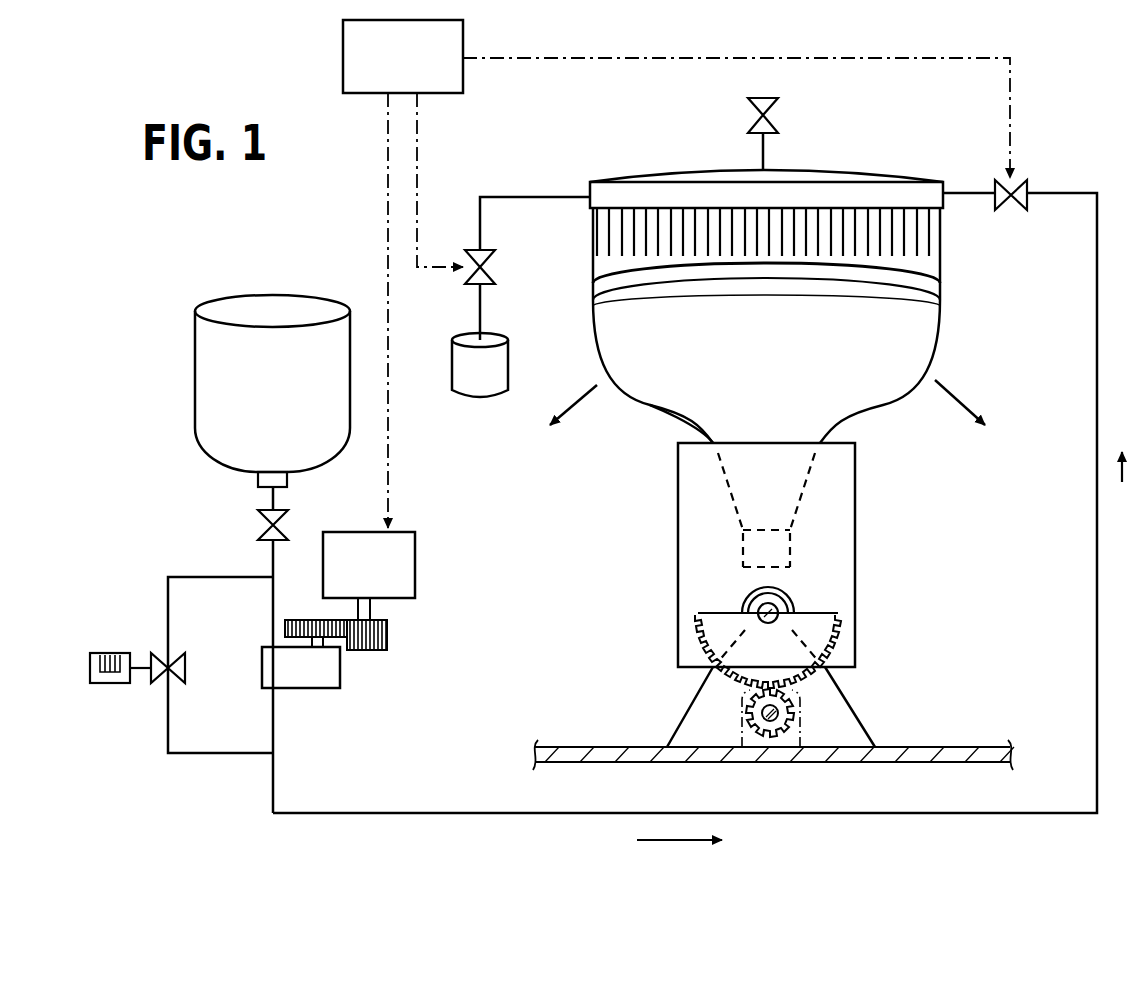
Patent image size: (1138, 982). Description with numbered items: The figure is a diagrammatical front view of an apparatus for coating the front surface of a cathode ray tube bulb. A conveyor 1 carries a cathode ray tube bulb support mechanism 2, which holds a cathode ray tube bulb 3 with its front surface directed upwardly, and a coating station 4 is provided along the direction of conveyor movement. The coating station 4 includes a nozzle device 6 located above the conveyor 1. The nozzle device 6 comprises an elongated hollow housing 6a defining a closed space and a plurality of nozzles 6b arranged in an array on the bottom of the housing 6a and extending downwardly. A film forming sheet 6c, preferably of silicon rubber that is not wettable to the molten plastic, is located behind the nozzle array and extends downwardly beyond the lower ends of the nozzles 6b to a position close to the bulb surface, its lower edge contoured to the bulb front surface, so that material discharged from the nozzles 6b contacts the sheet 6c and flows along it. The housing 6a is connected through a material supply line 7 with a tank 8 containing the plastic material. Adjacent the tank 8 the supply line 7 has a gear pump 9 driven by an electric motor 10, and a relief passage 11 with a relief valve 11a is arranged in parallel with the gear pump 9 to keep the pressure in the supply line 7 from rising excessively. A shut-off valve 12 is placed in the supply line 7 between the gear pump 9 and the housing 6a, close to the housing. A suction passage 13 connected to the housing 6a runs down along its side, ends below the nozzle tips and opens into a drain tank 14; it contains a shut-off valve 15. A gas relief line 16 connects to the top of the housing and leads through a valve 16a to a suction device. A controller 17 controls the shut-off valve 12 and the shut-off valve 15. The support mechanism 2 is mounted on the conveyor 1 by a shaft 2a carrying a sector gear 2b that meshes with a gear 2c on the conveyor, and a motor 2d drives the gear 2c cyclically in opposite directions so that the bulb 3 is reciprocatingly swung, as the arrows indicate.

The conveyor 1 is at (567, 748).
The cathode ray tube bulb support mechanism 2 is at (697, 574).
The shaft 2a is at (790, 606).
The sector gear 2b is at (825, 622).
The gear 2c is at (800, 712).
The motor 2d is at (738, 735).
The cathode ray tube bulb 3 is at (850, 395).
The coating station 4 is at (1008, 370).
The nozzle device 6 is at (799, 270).
The hollow housing 6a is at (640, 196).
The nozzles 6b is at (925, 240).
The film forming sheet 6c is at (920, 272).
The material supply line 7 is at (440, 812).
The tank 8 is at (205, 348).
The gear pump 9 is at (332, 690).
The electric motor 10 is at (405, 585).
The relief passage 11 is at (205, 577).
The relief valve 11a is at (100, 690).
The shut-off valve 12 is at (1015, 212).
The suction passage 13 is at (527, 197).
The drain tank 14 is at (497, 370).
The shut-off valve 15 is at (495, 262).
The gas relief line 16 is at (762, 150).
The valve 16a is at (778, 108).
The controller 17 is at (343, 40).